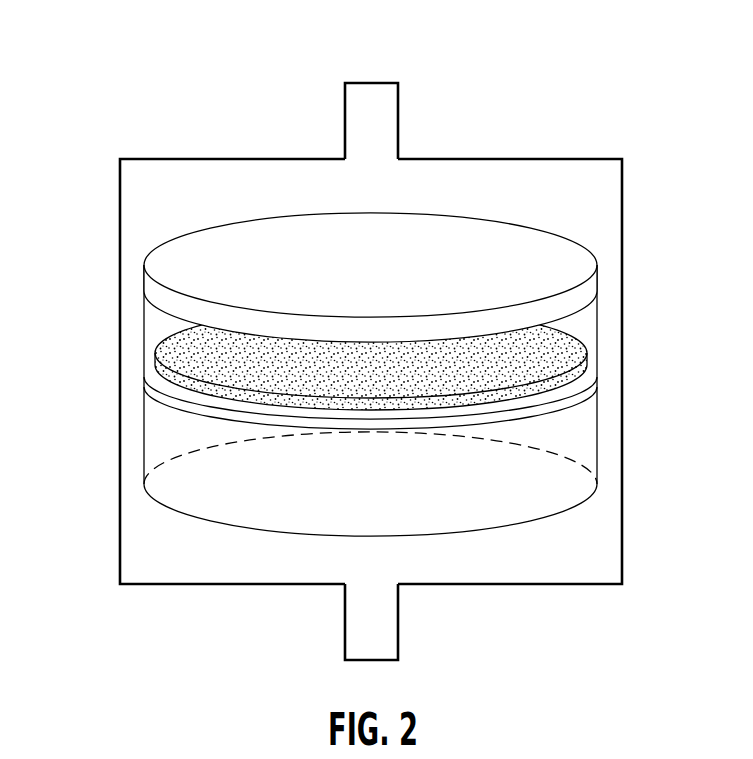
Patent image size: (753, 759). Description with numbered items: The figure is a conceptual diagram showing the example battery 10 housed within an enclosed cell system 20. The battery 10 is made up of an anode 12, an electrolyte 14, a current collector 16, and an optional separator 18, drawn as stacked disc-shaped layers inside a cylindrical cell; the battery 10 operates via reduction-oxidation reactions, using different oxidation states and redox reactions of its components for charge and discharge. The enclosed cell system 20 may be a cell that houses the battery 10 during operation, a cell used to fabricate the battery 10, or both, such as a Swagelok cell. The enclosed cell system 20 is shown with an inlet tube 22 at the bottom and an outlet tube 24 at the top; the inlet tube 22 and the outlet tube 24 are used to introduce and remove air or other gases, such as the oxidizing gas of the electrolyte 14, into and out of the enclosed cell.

The enclosed cell system 20 is at (183, 101).
The battery 10 is at (360, 342).
The anode 12 is at (575, 423).
The electrolyte 14 is at (587, 367).
The current collector 16 is at (590, 290).
The separator 18 is at (185, 343).
The inlet tube 22 is at (378, 620).
The outlet tube 24 is at (377, 122).